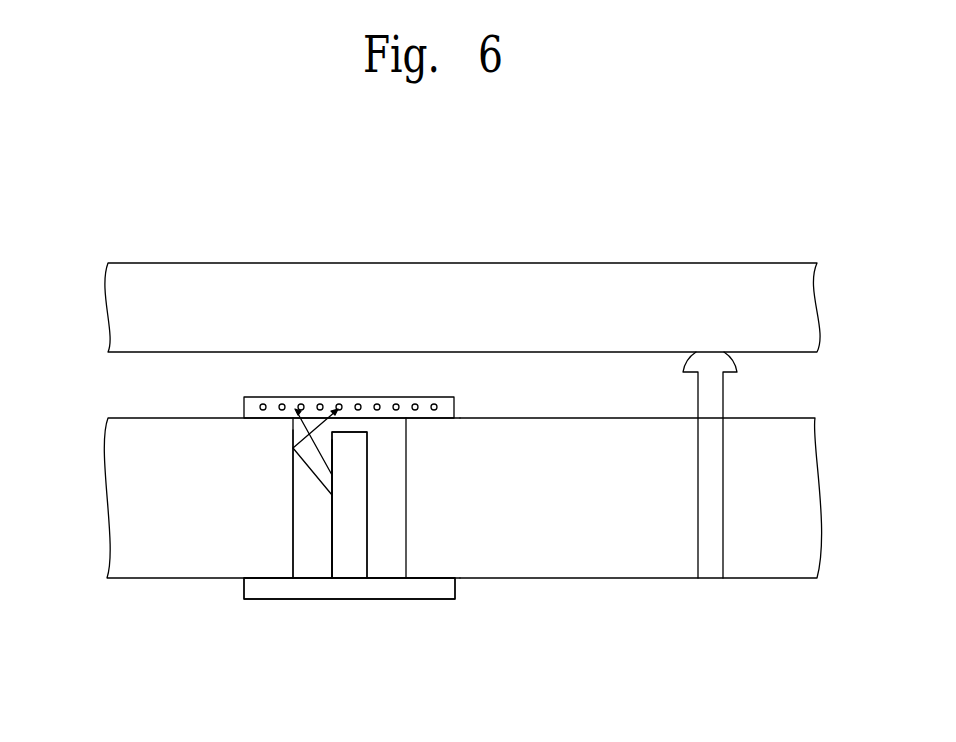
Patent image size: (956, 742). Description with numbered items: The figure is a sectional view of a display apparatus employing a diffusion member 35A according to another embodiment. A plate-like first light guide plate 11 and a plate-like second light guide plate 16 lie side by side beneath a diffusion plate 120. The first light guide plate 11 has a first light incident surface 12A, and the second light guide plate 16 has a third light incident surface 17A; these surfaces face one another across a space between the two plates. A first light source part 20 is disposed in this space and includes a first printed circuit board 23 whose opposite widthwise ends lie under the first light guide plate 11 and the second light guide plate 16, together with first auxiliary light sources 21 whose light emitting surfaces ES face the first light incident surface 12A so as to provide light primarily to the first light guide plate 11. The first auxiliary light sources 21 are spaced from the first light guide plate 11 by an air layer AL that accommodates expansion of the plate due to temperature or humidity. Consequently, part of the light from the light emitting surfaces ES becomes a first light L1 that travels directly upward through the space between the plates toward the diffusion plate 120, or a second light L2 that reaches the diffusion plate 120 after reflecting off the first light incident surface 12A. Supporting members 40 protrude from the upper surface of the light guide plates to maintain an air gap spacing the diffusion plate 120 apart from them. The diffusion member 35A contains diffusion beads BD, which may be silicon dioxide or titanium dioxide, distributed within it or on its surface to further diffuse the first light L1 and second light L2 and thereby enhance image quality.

The diffusion plate 120 is at (120, 309).
The first light guide plate 11 is at (163, 562).
The second light guide plate 16 is at (605, 562).
The first light incident surface 12A is at (292, 541).
The third light incident surface 17A is at (405, 541).
The air layer AL is at (307, 560).
The first light source part 20 is at (400, 663).
The first auxiliary light sources 21 is at (350, 560).
The light emitting surfaces ES is at (333, 558).
The first printed circuit board 23 is at (385, 590).
The diffusion member 35A is at (422, 391).
The diffusion beads BD is at (438, 407).
The first light L1 is at (306, 430).
The second light L2 is at (308, 466).
The supporting members 40 is at (719, 392).